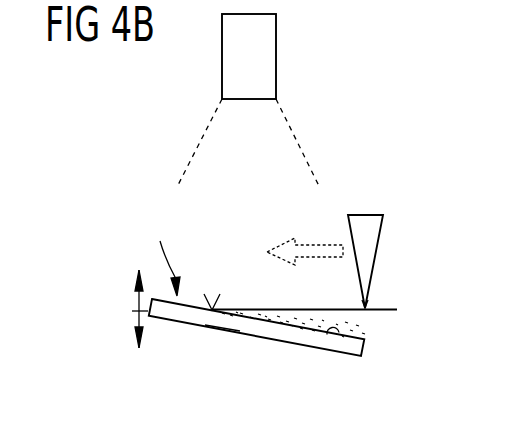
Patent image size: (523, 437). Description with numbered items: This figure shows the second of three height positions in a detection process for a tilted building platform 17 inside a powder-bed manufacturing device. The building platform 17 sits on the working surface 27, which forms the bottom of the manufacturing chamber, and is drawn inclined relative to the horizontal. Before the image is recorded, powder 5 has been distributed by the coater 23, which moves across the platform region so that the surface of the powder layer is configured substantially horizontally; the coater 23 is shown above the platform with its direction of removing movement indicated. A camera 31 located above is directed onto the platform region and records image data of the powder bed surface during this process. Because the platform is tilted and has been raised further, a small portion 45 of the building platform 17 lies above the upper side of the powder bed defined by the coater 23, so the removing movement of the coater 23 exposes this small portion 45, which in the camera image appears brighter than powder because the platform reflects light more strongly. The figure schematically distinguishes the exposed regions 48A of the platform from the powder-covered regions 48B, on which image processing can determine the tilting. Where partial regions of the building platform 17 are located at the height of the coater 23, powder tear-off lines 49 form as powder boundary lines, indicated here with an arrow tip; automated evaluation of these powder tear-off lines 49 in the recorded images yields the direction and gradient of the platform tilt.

The camera 31 is at (276, 56).
The coater 23 is at (373, 228).
The working surface 27 is at (389, 305).
The powder 5 is at (358, 320).
The building platform 17 is at (265, 338).
The small portion 45 is at (163, 254).
The exposed regions 48A is at (188, 303).
The powder-covered regions 48B is at (335, 340).
The powder tear-off lines 49 is at (213, 324).